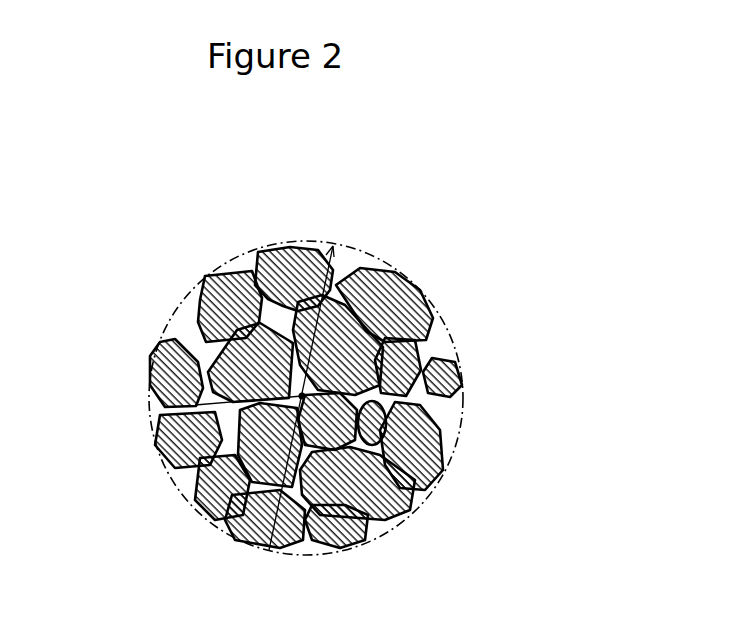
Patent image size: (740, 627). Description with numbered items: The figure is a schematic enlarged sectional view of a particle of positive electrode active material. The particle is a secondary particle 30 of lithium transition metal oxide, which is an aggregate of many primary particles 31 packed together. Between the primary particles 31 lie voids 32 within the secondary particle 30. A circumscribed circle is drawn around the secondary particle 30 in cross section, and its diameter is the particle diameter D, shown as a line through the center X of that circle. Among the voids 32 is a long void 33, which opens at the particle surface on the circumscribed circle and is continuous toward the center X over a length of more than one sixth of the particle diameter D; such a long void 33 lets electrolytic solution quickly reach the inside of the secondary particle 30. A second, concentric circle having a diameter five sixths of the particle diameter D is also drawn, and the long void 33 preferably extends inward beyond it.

The secondary particle 30 is at (433, 150).
The primary particle 31 is at (206, 279).
The void 32 is at (275, 250).
The long void 33 is at (153, 357).
The center X is at (155, 445).
The particle diameter D is at (237, 545).